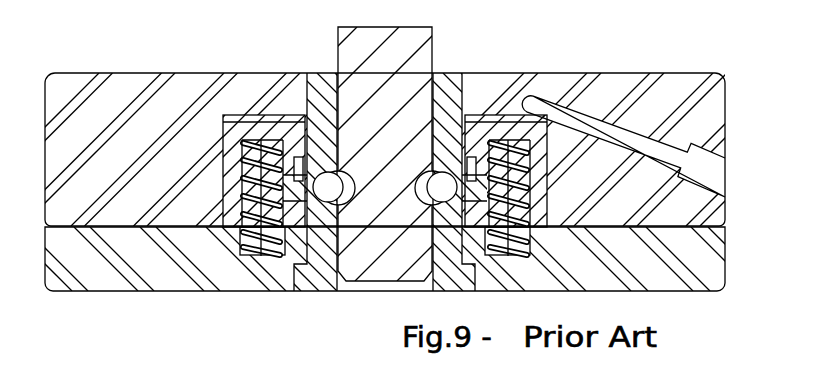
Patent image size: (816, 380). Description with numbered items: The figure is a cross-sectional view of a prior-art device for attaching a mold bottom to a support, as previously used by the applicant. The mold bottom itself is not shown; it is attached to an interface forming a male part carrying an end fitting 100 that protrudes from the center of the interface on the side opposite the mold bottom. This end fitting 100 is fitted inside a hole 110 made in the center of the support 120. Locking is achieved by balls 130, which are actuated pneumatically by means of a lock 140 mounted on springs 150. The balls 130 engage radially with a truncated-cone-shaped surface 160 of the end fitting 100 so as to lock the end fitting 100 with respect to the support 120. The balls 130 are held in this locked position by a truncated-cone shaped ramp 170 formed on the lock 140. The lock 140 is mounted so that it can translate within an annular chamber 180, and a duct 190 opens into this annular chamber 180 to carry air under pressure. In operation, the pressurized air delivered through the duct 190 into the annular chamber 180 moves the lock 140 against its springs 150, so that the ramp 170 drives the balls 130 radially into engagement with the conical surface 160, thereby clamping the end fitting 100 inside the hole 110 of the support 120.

The end fitting 100 is at (420, 40).
The hole 110 is at (344, 289).
The support 120 is at (89, 82).
The balls 130 is at (423, 160).
The lock 140 is at (243, 115).
The springs 150 is at (262, 292).
The truncated-cone-shaped surface 160 is at (420, 198).
The truncated-cone shaped ramp 170 is at (341, 138).
The annular chamber 180 is at (265, 114).
The duct 190 is at (614, 124).